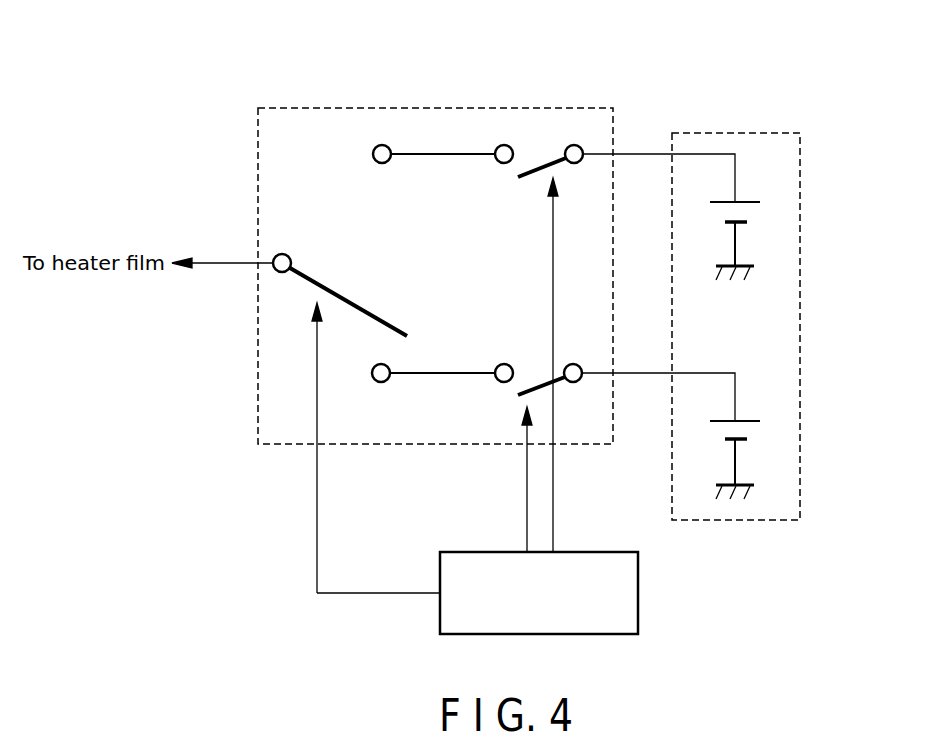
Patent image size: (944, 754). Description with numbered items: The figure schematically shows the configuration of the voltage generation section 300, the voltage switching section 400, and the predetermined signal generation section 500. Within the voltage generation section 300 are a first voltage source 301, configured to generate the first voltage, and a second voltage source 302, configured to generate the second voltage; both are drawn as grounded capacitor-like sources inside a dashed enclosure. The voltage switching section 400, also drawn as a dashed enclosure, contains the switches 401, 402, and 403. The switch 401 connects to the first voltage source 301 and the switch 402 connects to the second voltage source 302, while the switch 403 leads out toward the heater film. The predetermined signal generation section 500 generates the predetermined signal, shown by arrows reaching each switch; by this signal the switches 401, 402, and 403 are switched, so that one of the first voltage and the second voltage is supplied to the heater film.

The voltage generation section 300 is at (800, 307).
The first voltage source 301 is at (743, 202).
The second voltage source 302 is at (743, 421).
The voltage switching section 400 is at (448, 107).
The switch 401 is at (544, 164).
The switch 402 is at (537, 380).
The switch 403 is at (345, 292).
The predetermined signal generation section 500 is at (638, 593).